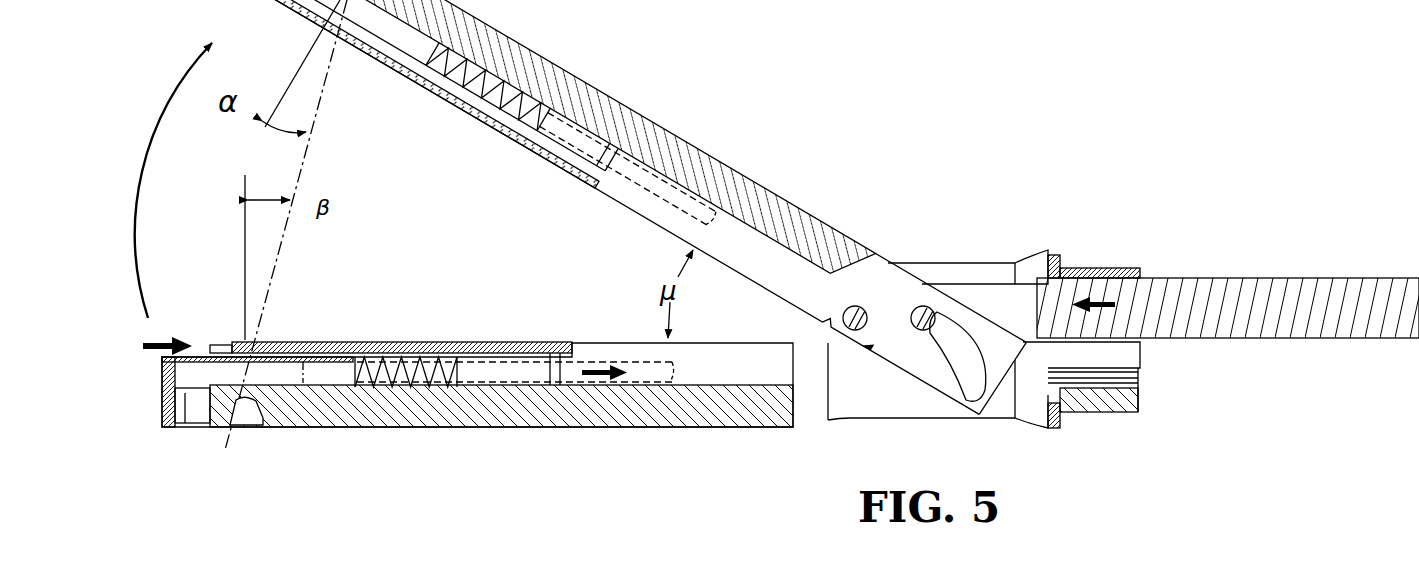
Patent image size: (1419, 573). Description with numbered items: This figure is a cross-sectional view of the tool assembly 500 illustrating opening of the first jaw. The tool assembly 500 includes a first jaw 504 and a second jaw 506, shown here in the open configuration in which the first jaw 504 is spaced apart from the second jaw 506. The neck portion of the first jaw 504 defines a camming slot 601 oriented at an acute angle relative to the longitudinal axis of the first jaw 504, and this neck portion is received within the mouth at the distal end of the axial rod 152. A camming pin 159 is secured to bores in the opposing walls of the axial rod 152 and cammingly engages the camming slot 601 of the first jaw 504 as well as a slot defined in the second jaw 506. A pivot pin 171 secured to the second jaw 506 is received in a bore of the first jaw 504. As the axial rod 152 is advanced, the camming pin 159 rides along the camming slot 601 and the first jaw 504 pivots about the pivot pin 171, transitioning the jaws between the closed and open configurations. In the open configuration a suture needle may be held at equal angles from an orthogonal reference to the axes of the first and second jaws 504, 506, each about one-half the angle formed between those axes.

The tool assembly 500 is at (882, 185).
The first jaw 504 is at (588, 98).
The second jaw 506 is at (490, 415).
The axial rod 152 is at (1188, 290).
The camming pin 159 is at (923, 310).
The pivot pin 171 is at (853, 306).
The camming slot 601 is at (967, 383).